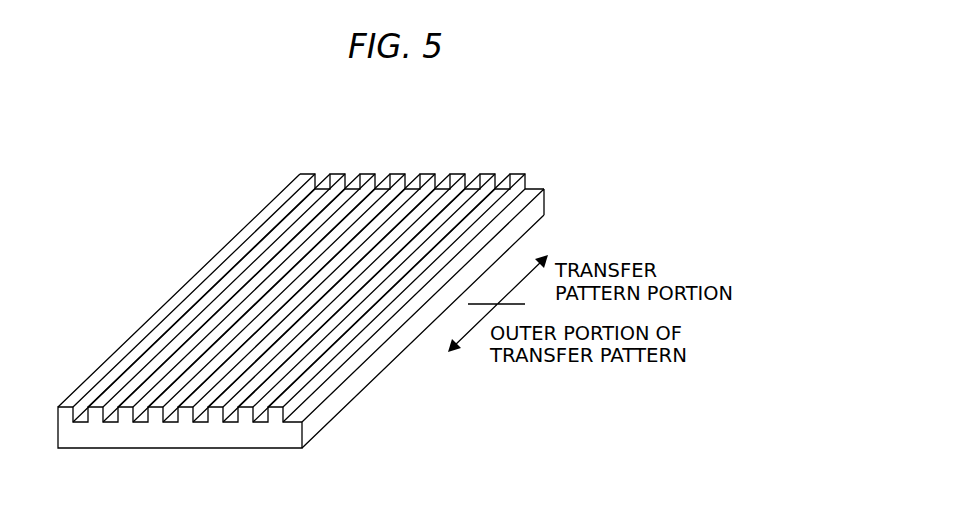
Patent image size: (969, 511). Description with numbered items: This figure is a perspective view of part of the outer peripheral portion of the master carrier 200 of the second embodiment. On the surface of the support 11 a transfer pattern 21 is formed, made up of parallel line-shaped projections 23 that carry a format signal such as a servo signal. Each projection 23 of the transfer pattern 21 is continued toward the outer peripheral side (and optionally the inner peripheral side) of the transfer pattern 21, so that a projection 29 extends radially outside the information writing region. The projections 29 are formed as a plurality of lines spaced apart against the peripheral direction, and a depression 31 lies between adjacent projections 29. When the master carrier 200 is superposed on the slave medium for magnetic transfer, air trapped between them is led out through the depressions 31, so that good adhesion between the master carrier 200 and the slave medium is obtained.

The master carrier 200 is at (154, 217).
The support 11 is at (328, 423).
The transfer pattern 21 is at (268, 188).
The projection 23 is at (363, 174).
The projection 29 is at (108, 365).
The depression 31 is at (140, 423).